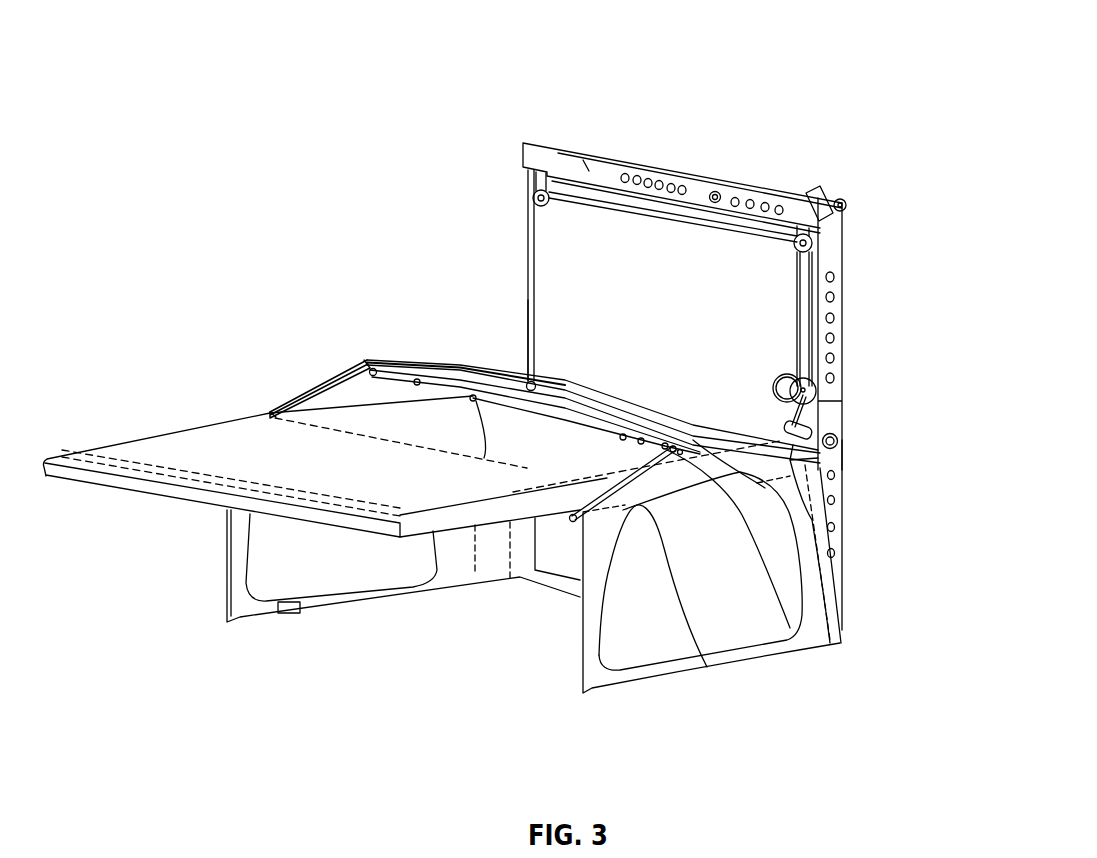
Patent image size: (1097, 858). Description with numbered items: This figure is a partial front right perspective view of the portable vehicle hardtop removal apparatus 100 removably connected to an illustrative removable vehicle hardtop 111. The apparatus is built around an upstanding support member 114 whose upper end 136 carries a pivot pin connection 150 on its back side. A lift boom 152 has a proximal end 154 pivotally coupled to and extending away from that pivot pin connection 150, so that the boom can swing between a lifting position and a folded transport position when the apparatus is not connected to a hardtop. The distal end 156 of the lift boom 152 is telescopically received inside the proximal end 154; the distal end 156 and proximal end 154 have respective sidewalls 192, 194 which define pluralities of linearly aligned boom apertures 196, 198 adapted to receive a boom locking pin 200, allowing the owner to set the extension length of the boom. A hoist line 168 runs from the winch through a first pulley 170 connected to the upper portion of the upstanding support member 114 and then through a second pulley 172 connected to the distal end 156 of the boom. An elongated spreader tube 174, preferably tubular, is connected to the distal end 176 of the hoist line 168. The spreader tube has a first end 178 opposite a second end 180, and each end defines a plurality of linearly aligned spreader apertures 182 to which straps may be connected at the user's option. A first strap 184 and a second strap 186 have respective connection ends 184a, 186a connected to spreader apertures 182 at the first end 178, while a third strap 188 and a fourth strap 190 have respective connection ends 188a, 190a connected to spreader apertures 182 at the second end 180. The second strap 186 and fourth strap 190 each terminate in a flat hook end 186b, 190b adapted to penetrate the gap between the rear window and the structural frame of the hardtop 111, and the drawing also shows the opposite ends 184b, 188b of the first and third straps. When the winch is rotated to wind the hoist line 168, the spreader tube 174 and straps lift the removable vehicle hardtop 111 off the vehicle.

The portable vehicle hardtop removal apparatus 100 is at (520, 96).
The removable vehicle hardtop 111 is at (176, 441).
The upstanding support member 114 is at (836, 412).
The upper end 136 is at (832, 263).
The pivot pin connection 150 is at (840, 199).
The lift boom 152 is at (708, 193).
The proximal end 154 is at (807, 195).
The distal end 156 is at (558, 158).
The hoist line 168 is at (527, 235).
The first pulley 170 is at (793, 252).
The second pulley 172 is at (551, 201).
The elongated spreader tube 174 is at (577, 417).
The distal end 176 is at (527, 340).
The first end 178 is at (397, 364).
The second end 180 is at (765, 488).
The spreader apertures 182 is at (484, 458).
The first strap 184 is at (323, 375).
The connection end 184a is at (366, 362).
The side rail lower end 184b is at (283, 406).
The second strap 186 is at (465, 367).
The connection end 186a is at (422, 365).
The flat hook end 186b is at (505, 378).
The third strap 188 is at (707, 667).
The connection end 188a is at (790, 628).
The cover flap bracket 188b is at (571, 517).
The fourth strap 190 is at (823, 498).
The connection end 190a is at (698, 437).
The flat hook end 190b is at (843, 455).
The sidewalls 192 is at (586, 166).
The sidewalls 194 is at (734, 198).
The boom apertures 196 is at (648, 181).
The boom apertures 198 is at (822, 187).
The boom locking pin 200 is at (711, 201).